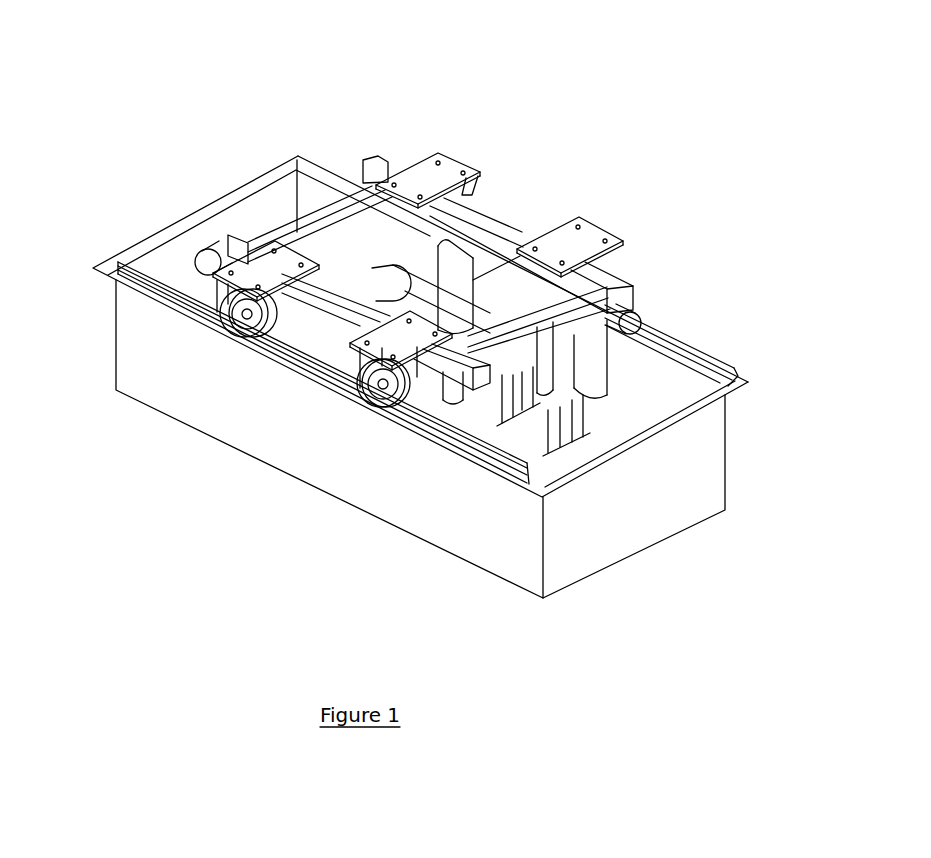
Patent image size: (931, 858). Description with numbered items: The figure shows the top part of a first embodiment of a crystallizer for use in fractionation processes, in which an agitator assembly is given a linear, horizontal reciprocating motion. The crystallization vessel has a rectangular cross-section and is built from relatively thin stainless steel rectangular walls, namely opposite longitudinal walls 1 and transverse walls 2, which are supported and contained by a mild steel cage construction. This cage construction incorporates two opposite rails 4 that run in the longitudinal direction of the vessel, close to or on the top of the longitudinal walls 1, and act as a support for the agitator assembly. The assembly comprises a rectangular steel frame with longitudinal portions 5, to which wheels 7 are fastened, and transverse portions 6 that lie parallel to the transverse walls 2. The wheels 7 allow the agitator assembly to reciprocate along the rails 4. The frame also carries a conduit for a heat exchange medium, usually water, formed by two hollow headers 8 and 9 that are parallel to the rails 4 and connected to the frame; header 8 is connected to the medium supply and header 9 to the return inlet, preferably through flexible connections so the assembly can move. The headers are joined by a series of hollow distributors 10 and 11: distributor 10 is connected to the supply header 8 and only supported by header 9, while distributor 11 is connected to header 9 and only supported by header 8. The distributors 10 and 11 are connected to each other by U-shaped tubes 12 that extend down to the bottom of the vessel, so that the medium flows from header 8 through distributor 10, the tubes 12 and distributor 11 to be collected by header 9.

The longitudinal walls 1 is at (257, 413).
The transverse walls 2 is at (703, 447).
The rails 4 is at (157, 287).
The longitudinal portions 5 is at (465, 262).
The transverse portions 6 is at (314, 222).
The wheels 7 is at (395, 405).
The hollow header 8 is at (632, 324).
The hollow header 9 is at (204, 258).
The hollow distributor 10 is at (620, 398).
The hollow distributor 11 is at (381, 278).
The U-shaped tubes 12 is at (512, 350).